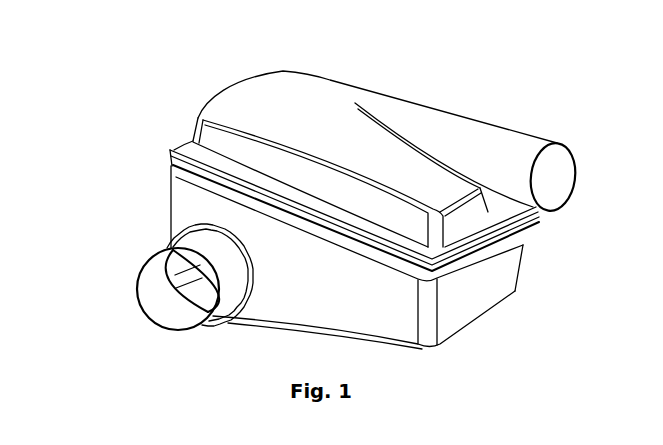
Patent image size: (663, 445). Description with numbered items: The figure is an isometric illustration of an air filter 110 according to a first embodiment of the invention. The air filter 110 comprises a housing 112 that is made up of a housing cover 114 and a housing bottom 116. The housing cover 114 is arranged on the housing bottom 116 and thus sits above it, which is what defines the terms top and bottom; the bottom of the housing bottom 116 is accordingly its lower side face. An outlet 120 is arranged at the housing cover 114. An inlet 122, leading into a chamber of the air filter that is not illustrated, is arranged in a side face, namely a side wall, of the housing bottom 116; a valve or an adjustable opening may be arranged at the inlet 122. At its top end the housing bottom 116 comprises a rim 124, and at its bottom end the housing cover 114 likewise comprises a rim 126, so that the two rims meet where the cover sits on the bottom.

The air filter 110 is at (203, 78).
The housing 112 is at (381, 78).
The housing cover 114 is at (313, 72).
The housing bottom 116 is at (477, 323).
The outlet 120 is at (522, 112).
The inlet 122 is at (147, 323).
The rim 124 is at (162, 175).
The rim 126 is at (163, 150).